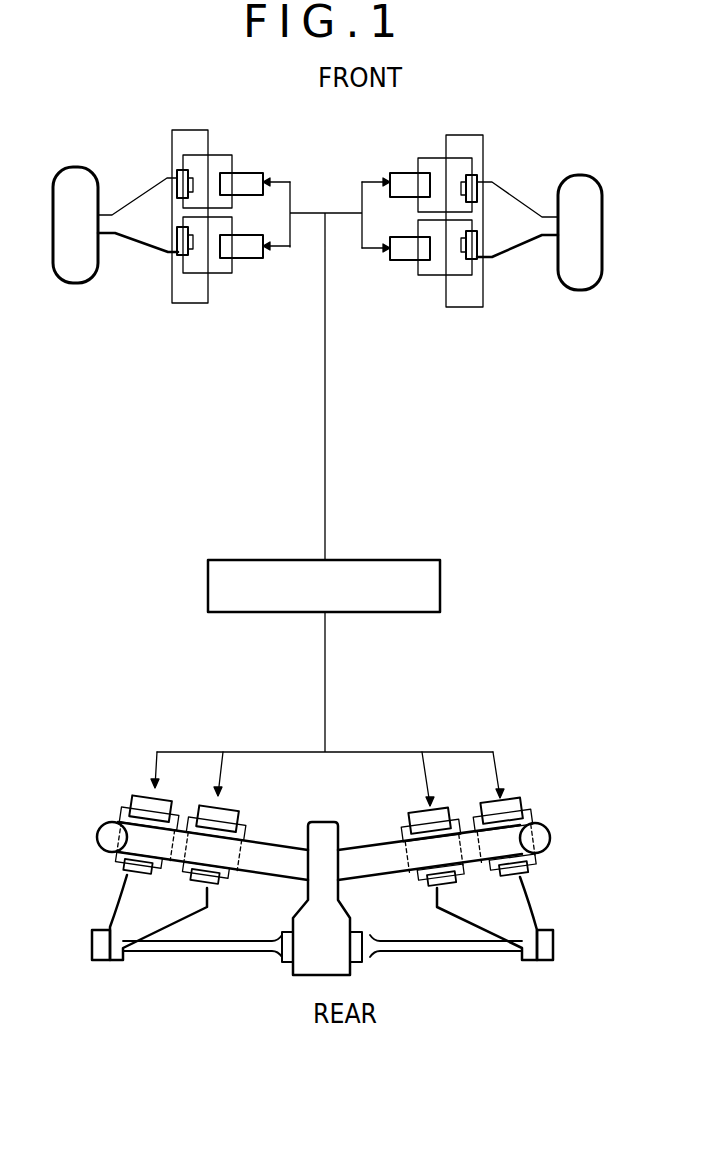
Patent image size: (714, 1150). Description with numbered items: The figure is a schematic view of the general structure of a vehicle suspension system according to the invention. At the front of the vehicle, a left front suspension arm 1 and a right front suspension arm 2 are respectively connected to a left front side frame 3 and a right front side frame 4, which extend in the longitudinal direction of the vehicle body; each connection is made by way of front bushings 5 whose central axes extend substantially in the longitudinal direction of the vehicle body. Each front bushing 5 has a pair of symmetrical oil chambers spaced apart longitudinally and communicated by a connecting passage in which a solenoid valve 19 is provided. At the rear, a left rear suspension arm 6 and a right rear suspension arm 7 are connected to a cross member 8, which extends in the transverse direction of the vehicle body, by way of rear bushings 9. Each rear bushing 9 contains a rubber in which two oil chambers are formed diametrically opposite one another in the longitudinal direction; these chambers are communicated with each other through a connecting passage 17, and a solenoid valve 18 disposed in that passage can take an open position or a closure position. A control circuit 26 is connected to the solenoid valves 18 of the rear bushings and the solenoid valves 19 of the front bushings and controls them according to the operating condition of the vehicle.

The left front suspension arm 1 is at (140, 228).
The right front suspension arm 2 is at (518, 232).
The left front side frame 3 is at (197, 130).
The right front side frame 4 is at (473, 135).
The front bushing 5 is at (176, 168).
The solenoid valve 19 is at (250, 173).
The control circuit 26 is at (428, 560).
The left rear suspension arm 6 is at (162, 915).
The right rear suspension arm 7 is at (500, 918).
The cross member 8 is at (274, 852).
The rear bushing 9 is at (120, 867).
The connecting passage 17 is at (118, 808).
The solenoid valve 18 is at (145, 793).